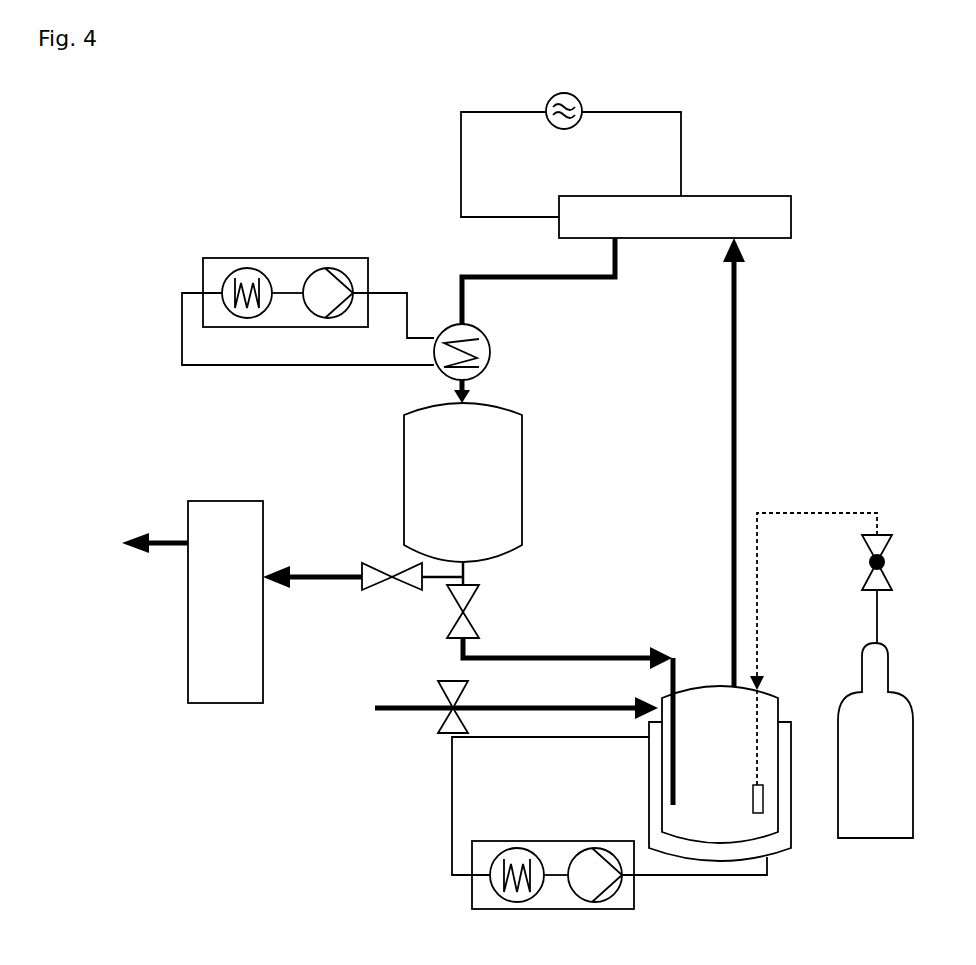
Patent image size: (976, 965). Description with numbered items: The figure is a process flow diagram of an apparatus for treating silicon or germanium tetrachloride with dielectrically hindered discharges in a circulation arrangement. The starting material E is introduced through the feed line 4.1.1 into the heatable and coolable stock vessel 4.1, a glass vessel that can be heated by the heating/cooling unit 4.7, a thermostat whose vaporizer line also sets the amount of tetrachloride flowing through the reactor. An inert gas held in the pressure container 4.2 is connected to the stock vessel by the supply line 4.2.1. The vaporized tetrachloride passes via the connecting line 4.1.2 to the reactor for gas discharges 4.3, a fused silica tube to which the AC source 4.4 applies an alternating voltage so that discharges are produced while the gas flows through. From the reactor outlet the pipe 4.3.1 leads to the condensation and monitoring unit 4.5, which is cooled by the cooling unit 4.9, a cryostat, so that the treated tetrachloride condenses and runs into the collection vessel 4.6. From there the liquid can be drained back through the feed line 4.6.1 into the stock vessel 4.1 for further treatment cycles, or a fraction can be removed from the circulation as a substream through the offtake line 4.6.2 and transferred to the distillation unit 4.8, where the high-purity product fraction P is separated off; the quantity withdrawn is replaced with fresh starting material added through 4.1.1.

The stock vessel 4.1 is at (720, 759).
The feed line for starting material 4.1.1 is at (500, 707).
The connecting line 4.1.2 is at (761, 462).
The inert gas in pressure container 4.2 is at (875, 714).
The inert gas supply line 4.2.1 is at (821, 639).
The reactor for gas discharges 4.3 is at (675, 217).
The reactor outlet pipe 4.3.1 is at (538, 281).
The AC source 4.4 is at (571, 155).
The condensation and monitoring unit 4.5 is at (482, 363).
The collection vessel 4.6 is at (463, 482).
The feed line 4.6.1 is at (559, 615).
The offtake line 4.6.2 is at (363, 572).
The heating/cooling unit 4.7 is at (609, 823).
The distillation unit 4.8 is at (179, 602).
The cooling unit 4.9 is at (308, 298).